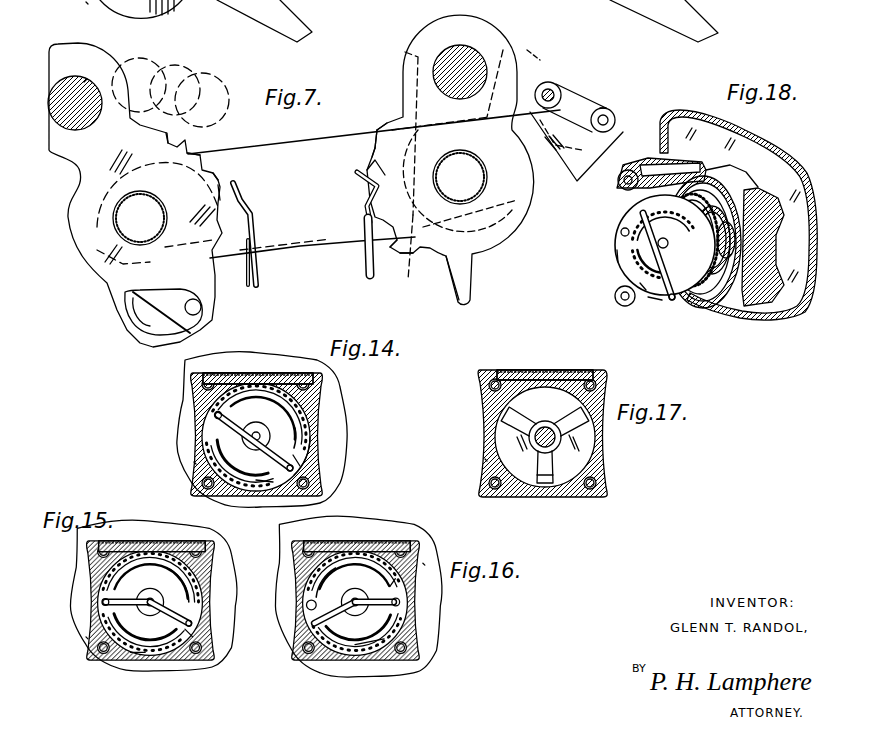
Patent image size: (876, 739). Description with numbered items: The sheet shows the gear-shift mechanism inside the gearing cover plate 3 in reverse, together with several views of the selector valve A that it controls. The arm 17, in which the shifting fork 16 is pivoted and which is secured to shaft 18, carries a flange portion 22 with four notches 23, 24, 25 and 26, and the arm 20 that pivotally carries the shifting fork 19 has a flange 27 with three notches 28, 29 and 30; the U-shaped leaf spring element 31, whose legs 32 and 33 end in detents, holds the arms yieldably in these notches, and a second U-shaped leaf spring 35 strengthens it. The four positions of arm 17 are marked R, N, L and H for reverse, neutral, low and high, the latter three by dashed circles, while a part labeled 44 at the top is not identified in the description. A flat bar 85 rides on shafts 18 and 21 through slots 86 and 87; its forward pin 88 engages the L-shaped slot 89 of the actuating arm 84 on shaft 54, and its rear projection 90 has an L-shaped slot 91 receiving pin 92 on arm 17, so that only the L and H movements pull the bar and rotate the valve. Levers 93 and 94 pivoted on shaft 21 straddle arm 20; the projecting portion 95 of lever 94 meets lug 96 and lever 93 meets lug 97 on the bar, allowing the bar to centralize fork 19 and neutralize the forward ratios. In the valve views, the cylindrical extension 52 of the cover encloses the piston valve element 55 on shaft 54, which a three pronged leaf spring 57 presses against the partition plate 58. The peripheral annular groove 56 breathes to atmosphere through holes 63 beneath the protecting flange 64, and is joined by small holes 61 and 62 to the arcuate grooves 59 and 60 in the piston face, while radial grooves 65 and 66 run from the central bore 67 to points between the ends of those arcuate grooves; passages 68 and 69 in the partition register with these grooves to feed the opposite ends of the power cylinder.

In FIG. 18, the gearing cover plate 3 is at (790, 150).
In FIG. 14, the gearing cover plate 3 is at (250, 429).
In FIG. 15, the gearing cover plate 3 is at (138, 595).
In FIG. 16, the gearing cover plate 3 is at (371, 596).
In FIG. 7, the shifting fork 16 is at (88, 78).
In FIG. 7, the arm 17 is at (70, 207).
In FIG. 7, the shaft 18 is at (128, 225).
In FIG. 7, the shifting fork 19 is at (462, 45).
In FIG. 7, the arm 20 is at (498, 45).
In FIG. 7, the shaft 21 is at (460, 190).
In FIG. 7, the flange portion 22 is at (217, 193).
In FIG. 7, the notch 23 is at (166, 143).
In FIG. 7, the notch 24 is at (196, 155).
In FIG. 7, the notch 25 is at (213, 173).
In FIG. 7, the notch 26 is at (212, 252).
In FIG. 7, the flange 27 is at (378, 135).
In FIG. 7, the notch 28 is at (370, 155).
In FIG. 7, the notch 29 is at (383, 166).
In FIG. 7, the notch 30 is at (412, 254).
In FIG. 7, the U-shaped leaf spring element 31 is at (252, 287).
In FIG. 7, the leg 32 is at (242, 206).
In FIG. 7, the leg 33 is at (366, 184).
In FIG. 7, the second U-shaped leaf spring 35 is at (335, 240).
In FIG. 7, the drum 44 is at (85, 3).
In FIG. 18, the cylindrical extension 52 is at (672, 300).
In FIG. 14, the cylindrical extension 52 is at (284, 434).
In FIG. 17, the cylindrical extension 52 is at (530, 433).
In FIG. 15, the cylindrical extension 52 is at (128, 600).
In FIG. 16, the cylindrical extension 52 is at (384, 600).
In FIG. 7, the shaft 54 is at (549, 87).
In FIG. 17, the shaft 54 is at (545, 421).
In FIG. 18, the piston valve element 55 is at (706, 300).
In FIG. 14, the piston valve element 55 is at (332, 456).
In FIG. 17, the piston valve element 55 is at (578, 453).
In FIG. 18, the annular groove 56 is at (728, 260).
In FIG. 18, the three pronged leaf spring 57 is at (724, 222).
In FIG. 17, the three pronged leaf spring 57 is at (545, 466).
In FIG. 18, the partition plate 58 is at (625, 220).
In FIG. 18, the arcuate groove 59 is at (640, 270).
In FIG. 14, the arcuate groove 59 is at (240, 481).
In FIG. 15, the arcuate groove 59 is at (143, 663).
In FIG. 16, the arcuate groove 59 is at (389, 631).
In FIG. 18, the arcuate groove 60 is at (722, 300).
In FIG. 14, the arcuate groove 60 is at (336, 421).
In FIG. 15, the arcuate groove 60 is at (211, 582).
In FIG. 16, the arcuate groove 60 is at (304, 582).
In FIG. 18, the small holes 61 is at (662, 300).
In FIG. 14, the small holes 61 is at (276, 503).
In FIG. 15, the small holes 61 is at (129, 679).
In FIG. 16, the small holes 61 is at (371, 669).
In FIG. 18, the small holes 62 is at (640, 222).
In FIG. 14, the small holes 62 is at (269, 417).
In FIG. 15, the small holes 62 is at (119, 578).
In FIG. 16, the small holes 62 is at (354, 553).
In FIG. 18, the holes 63 is at (661, 168).
In FIG. 14, the holes 63 is at (261, 357).
In FIG. 15, the holes 63 is at (149, 525).
In FIG. 16, the holes 63 is at (347, 527).
In FIG. 18, the protecting flange 64 is at (672, 172).
In FIG. 14, the protecting flange 64 is at (258, 357).
In FIG. 17, the protecting flange 64 is at (545, 359).
In FIG. 15, the protecting flange 64 is at (175, 545).
In FIG. 16, the protecting flange 64 is at (374, 530).
In FIG. 18, the radial groove 65 is at (642, 232).
In FIG. 14, the radial groove 65 is at (221, 435).
In FIG. 15, the radial groove 65 is at (97, 618).
In FIG. 16, the radial groove 65 is at (314, 616).
In FIG. 18, the radial groove 66 is at (672, 300).
In FIG. 14, the radial groove 66 is at (330, 474).
In FIG. 15, the radial groove 66 is at (217, 640).
In FIG. 16, the radial groove 66 is at (412, 587).
In FIG. 18, the central bore 67 is at (640, 283).
In FIG. 14, the central bore 67 is at (292, 426).
In FIG. 15, the central bore 67 is at (194, 597).
In FIG. 16, the central bore 67 is at (345, 646).
In FIG. 18, the passage 68 is at (621, 236).
In FIG. 14, the passage 68 is at (176, 426).
In FIG. 15, the passage 68 is at (89, 603).
In FIG. 16, the passage 68 is at (279, 604).
In FIG. 14, the passage 69 is at (338, 442).
In FIG. 15, the passage 69 is at (189, 613).
In FIG. 16, the passage 69 is at (395, 599).
In FIG. 7, the actuating arm 84 is at (565, 100).
In FIG. 7, the flat bar 85 is at (302, 248).
In FIG. 7, the slot 86 is at (165, 255).
In FIG. 7, the slot 87 is at (541, 170).
In FIG. 7, the pin 88 is at (615, 119).
In FIG. 7, the L-shaped slot 89 is at (612, 94).
In FIG. 7, the downwardly extending projection 90 is at (132, 343).
In FIG. 7, the L-shaped slot 91 is at (150, 328).
In FIG. 7, the pin 92 is at (188, 302).
In FIG. 7, the lever 93 is at (403, 52).
In FIG. 7, the lever 94 is at (530, 50).
In FIG. 7, the projecting portion 95 is at (462, 304).
In FIG. 7, the lug 96 is at (412, 270).
In FIG. 7, the lug 97 is at (395, 110).
In FIG. 18, the selector valve A is at (612, 261).
In FIG. 14, the selector valve A is at (169, 478).
In FIG. 17, the selector valve A is at (462, 476).
In FIG. 15, the selector valve A is at (66, 657).
In FIG. 16, the selector valve A is at (455, 542).
In FIG. 7, the reverse position R is at (77, 75).
In FIG. 7, the neutral position N is at (152, 59).
In FIG. 7, the low position L is at (192, 68).
In FIG. 7, the high position H is at (221, 80).